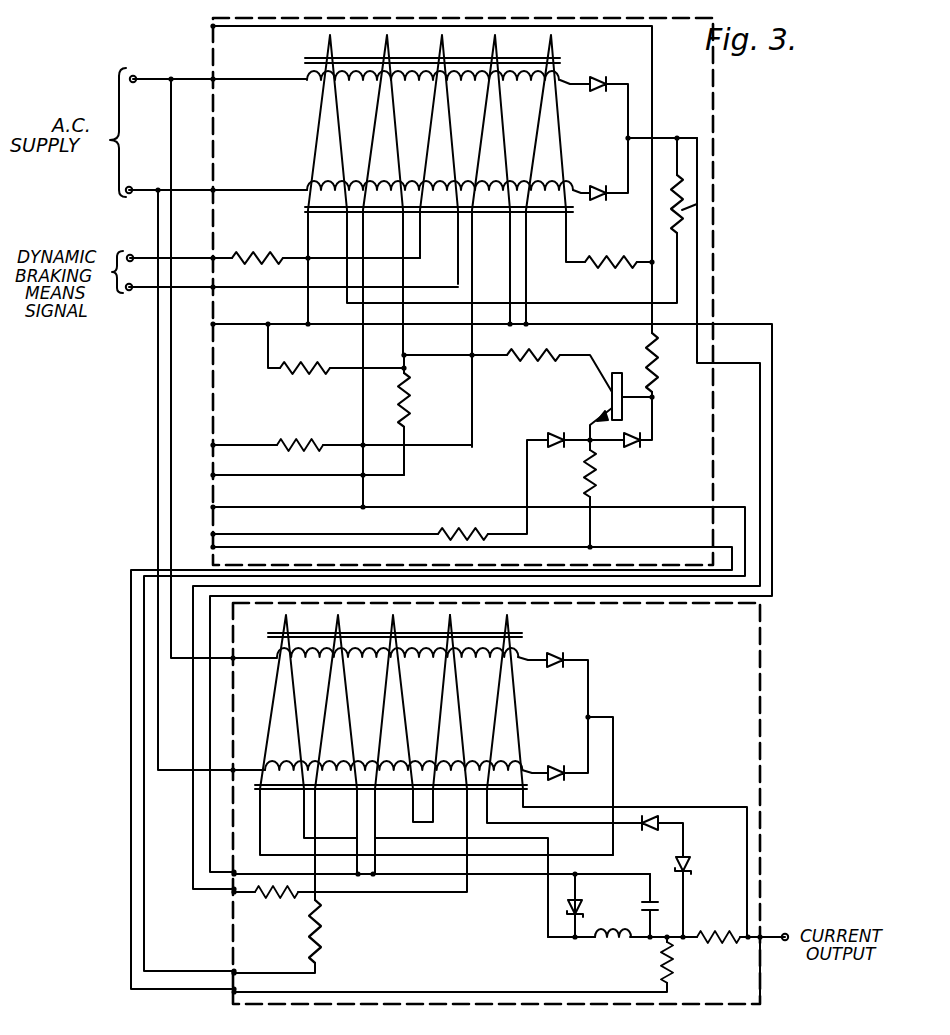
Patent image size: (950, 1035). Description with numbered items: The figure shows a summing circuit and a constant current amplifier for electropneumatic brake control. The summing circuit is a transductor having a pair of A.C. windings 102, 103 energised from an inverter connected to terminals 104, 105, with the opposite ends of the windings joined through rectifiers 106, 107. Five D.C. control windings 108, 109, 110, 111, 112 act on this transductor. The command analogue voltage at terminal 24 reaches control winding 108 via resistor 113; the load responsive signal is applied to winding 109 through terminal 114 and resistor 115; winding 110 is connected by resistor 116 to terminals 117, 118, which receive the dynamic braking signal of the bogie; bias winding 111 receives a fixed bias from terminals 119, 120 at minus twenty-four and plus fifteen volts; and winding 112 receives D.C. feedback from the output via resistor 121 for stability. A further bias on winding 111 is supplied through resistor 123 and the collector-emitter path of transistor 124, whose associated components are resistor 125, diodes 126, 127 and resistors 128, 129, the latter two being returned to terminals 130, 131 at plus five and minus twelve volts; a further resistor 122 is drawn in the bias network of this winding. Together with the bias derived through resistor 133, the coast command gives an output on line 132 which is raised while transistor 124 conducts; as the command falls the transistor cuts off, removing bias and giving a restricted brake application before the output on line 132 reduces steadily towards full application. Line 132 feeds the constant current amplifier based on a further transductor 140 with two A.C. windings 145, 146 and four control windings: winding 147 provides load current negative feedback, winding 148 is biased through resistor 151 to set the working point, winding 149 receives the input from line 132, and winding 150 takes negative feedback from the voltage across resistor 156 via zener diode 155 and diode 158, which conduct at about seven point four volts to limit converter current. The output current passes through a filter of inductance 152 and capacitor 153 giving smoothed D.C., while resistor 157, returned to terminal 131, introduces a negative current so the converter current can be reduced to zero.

The terminal 24 is at (210, 29).
The A.C. winding 102 is at (308, 85).
The A.C. winding 103 is at (306, 187).
The terminal 104 is at (135, 76).
The terminal 105 is at (130, 187).
The rectifier 106 is at (601, 77).
The rectifier 107 is at (597, 186).
The control winding 108 is at (553, 43).
The control winding 109 is at (496, 43).
The control winding 110 is at (443, 43).
The bias winding 111 is at (388, 43).
The control winding 112 is at (331, 43).
The resistor 113 is at (630, 258).
The terminal 114 is at (218, 442).
The resistor 115 is at (324, 440).
The resistor 116 is at (282, 252).
The terminal 117 is at (131, 255).
The terminal 118 is at (130, 289).
The terminal 119 is at (224, 470).
The terminal 120 is at (215, 506).
The resistor 121 is at (700, 205).
The resistor 122 is at (407, 404).
The resistor 123 is at (536, 369).
The transistor 124 is at (606, 396).
The resistor 125 is at (655, 373).
The diode 126 is at (637, 448).
The diode 127 is at (569, 450).
The resistor 128 is at (594, 495).
The resistor 129 is at (462, 531).
The terminal 130 is at (215, 533).
The terminal 131 is at (212, 547).
The line 132 is at (699, 277).
The resistor 133 is at (326, 364).
The transductor 140 is at (395, 637).
The A.C. winding 145 is at (276, 663).
The A.C. winding 146 is at (262, 768).
The control winding 147 is at (288, 620).
The control winding 148 is at (340, 620).
The control winding 149 is at (452, 620).
The control winding 150 is at (509, 620).
The resistor 151 is at (319, 937).
The inductance 152 is at (619, 947).
The capacitor 153 is at (616, 913).
The zener diode 155 is at (690, 865).
The resistor 156 is at (734, 948).
The resistor 157 is at (672, 982).
The diode 158 is at (648, 818).